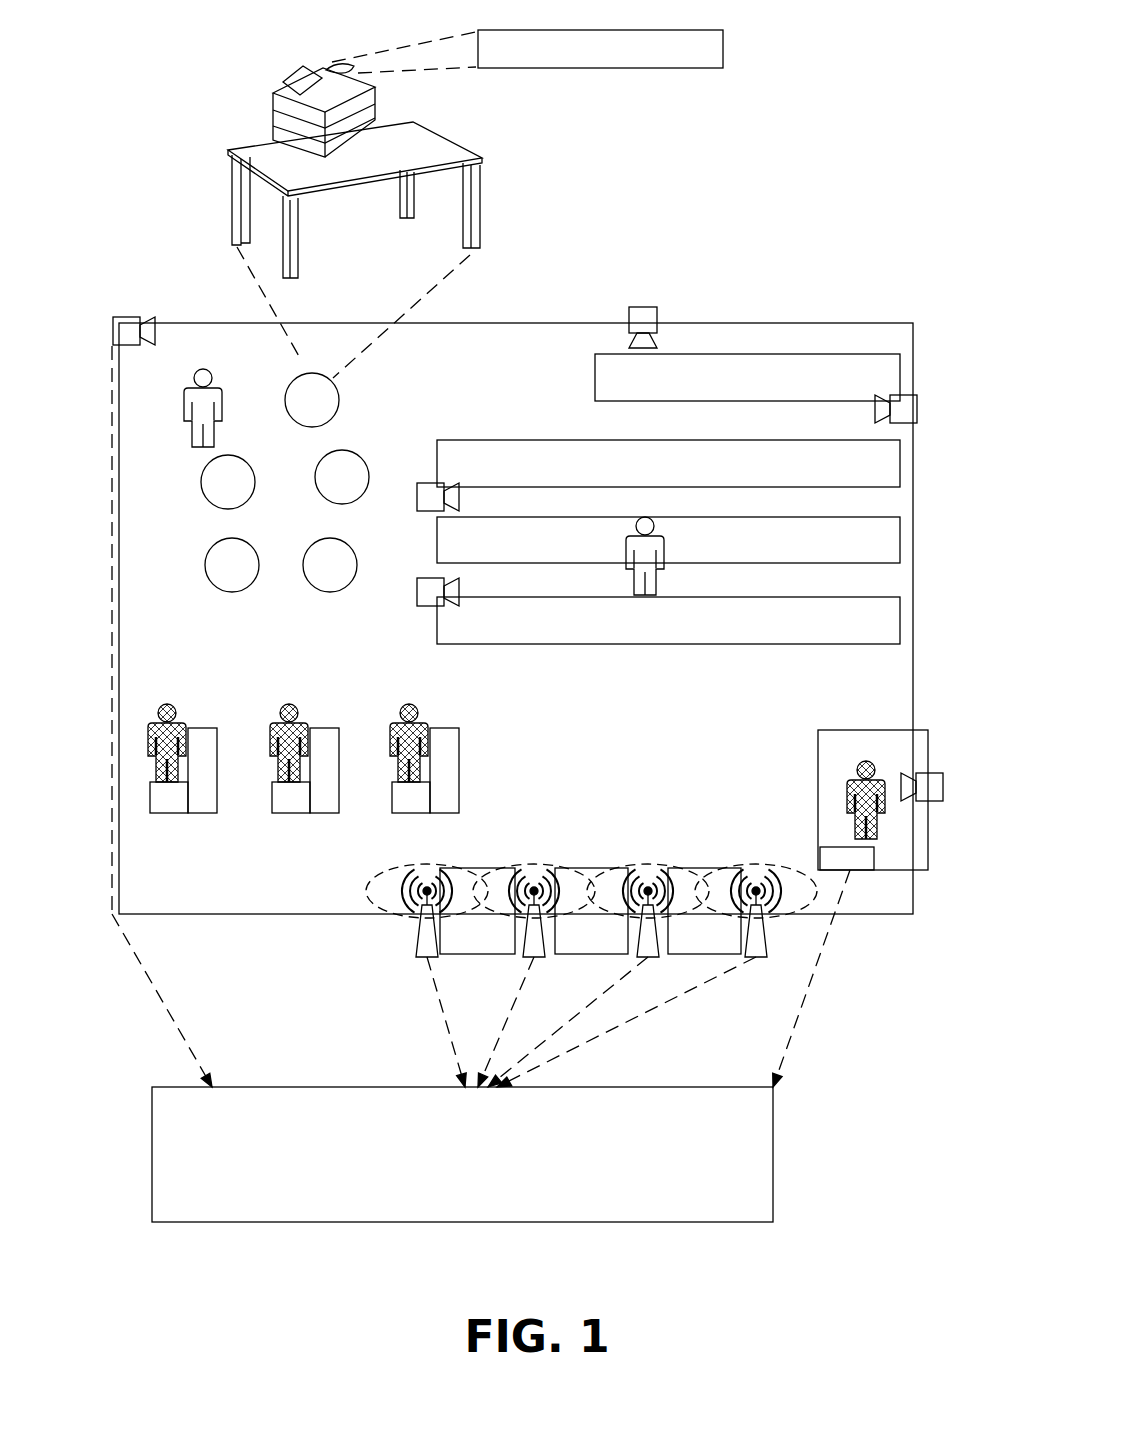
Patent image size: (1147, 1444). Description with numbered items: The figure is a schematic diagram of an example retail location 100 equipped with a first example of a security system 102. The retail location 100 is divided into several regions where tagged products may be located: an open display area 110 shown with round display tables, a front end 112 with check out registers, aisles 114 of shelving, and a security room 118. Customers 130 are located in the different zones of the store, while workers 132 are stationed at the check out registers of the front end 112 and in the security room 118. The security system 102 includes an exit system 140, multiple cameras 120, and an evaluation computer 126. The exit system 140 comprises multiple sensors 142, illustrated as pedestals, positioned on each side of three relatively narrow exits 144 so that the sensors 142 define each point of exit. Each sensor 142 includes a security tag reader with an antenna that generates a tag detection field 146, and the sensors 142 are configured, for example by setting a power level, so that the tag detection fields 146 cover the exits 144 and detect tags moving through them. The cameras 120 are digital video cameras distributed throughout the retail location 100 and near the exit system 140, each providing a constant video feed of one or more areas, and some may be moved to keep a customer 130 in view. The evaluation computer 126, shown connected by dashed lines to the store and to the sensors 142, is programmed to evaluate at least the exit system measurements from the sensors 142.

The retail location 100 is at (185, 315).
The security system 102 is at (135, 288).
The open display area 110 is at (388, 355).
The front end 112 is at (225, 672).
The aisles 114 is at (405, 558).
The security room 118 is at (860, 740).
The cameras 120 is at (113, 320).
The evaluation computer 126 is at (625, 1087).
The customers 130 is at (207, 369).
The workers 132 is at (167, 704).
The exit system 140 is at (385, 935).
The sensors 142 is at (416, 955).
The exits 144 is at (484, 868).
The tag detection field 146 is at (377, 872).